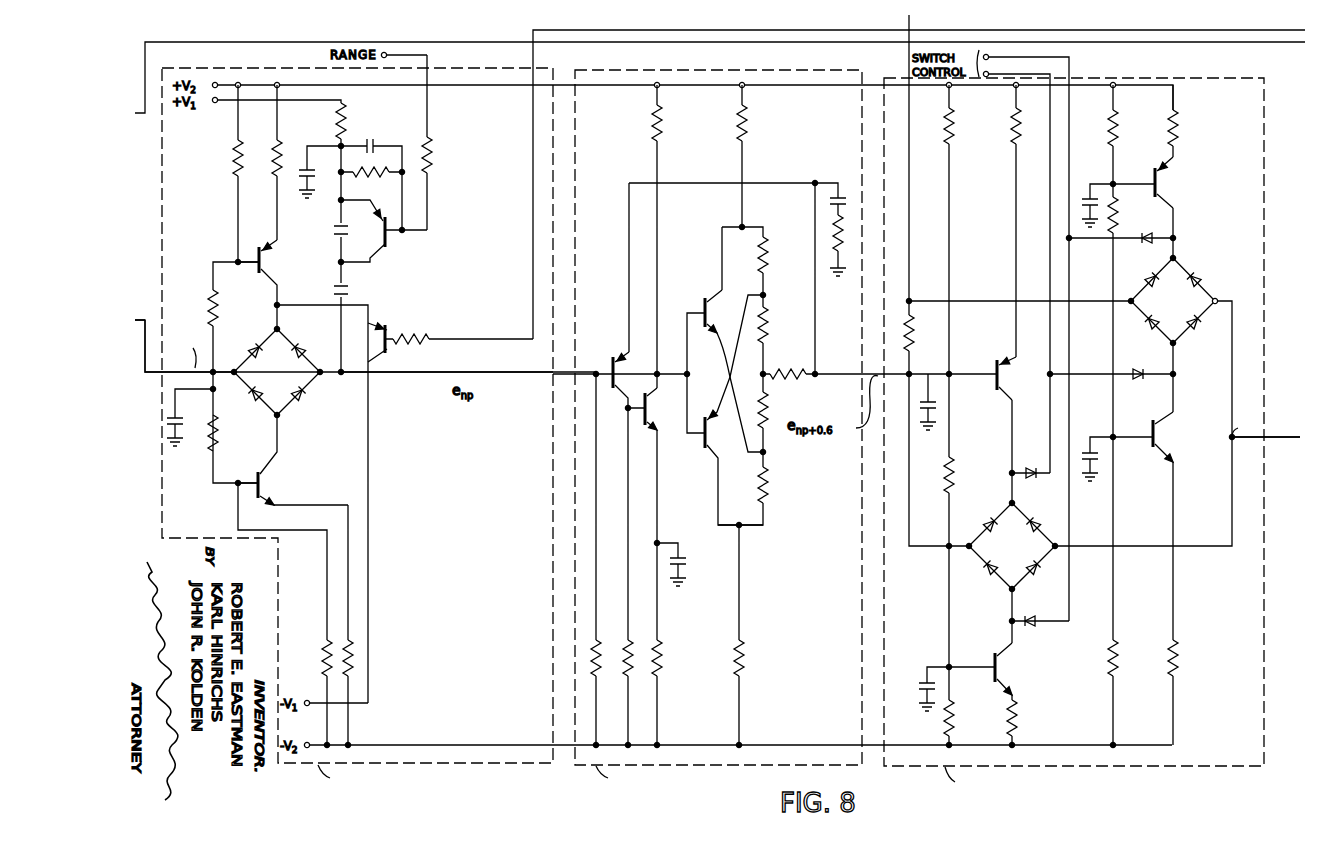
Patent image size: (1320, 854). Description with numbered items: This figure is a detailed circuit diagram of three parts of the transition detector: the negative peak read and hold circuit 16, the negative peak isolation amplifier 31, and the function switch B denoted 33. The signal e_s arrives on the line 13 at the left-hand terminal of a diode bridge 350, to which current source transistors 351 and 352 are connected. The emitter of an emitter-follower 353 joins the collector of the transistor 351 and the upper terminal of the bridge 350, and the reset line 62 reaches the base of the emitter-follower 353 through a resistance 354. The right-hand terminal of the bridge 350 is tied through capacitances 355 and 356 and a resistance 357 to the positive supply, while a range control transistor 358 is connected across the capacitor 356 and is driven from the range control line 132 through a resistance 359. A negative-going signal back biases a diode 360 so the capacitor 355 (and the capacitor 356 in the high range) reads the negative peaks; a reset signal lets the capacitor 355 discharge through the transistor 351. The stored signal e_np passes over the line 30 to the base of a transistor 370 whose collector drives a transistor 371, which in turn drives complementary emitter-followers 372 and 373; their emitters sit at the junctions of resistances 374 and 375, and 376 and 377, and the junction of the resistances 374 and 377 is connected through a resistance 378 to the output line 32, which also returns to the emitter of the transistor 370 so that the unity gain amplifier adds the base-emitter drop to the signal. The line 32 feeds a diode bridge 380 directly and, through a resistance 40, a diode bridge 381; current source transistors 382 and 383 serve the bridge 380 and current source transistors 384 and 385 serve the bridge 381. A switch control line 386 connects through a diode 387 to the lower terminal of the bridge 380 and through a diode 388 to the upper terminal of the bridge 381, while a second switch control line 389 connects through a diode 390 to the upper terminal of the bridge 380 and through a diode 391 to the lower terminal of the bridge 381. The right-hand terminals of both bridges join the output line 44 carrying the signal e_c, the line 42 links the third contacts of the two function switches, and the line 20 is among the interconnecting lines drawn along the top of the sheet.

The interconnect line 20 is at (171, 42).
The reset line 62 is at (533, 153).
The range control line 132 is at (428, 62).
The line 13 is at (206, 372).
The resistance 357 is at (343, 115).
The resistance 359 is at (428, 148).
The capacitance 356 is at (336, 238).
The capacitance 355 is at (334, 296).
The range control transistor 358 is at (388, 242).
The current source transistor 351 is at (259, 282).
The emitter-follower 353 is at (386, 321).
The resistance 354 is at (426, 335).
The diode bridge 350 is at (290, 380).
The diode 360 is at (249, 398).
The current source transistor 352 is at (259, 466).
The line 30 is at (553, 372).
The negative peak read and hold circuit 16 is at (540, 765).
The transistor 370 is at (613, 358).
The transistor 371 is at (646, 393).
The complementary emitter-follower 372 is at (703, 300).
The complementary emitter-follower 373 is at (703, 445).
The resistance 376 is at (766, 255).
The resistance 377 is at (766, 323).
The resistance 378 is at (780, 368).
The resistance 374 is at (766, 410).
The resistance 375 is at (766, 482).
The output line 32 is at (818, 372).
The negative peak isolation amplifier 31 is at (800, 769).
The switch control line 386 is at (1068, 58).
The second switch control line 389 is at (1015, 77).
The line 42 is at (909, 155).
The resistance 40 is at (912, 340).
The current source transistor 384 is at (1156, 168).
The diode 388 is at (1147, 233).
The diode bridge 381 is at (1186, 308).
The diode 391 is at (1136, 368).
The current source transistor 382 is at (998, 390).
The diode 390 is at (1025, 471).
The current source transistor 385 is at (1152, 447).
The output line 44 is at (1270, 437).
The diode bridge 380 is at (1025, 553).
The current source transistor 383 is at (993, 653).
The diode 387 is at (1035, 626).
The function switch B 33 is at (902, 767).